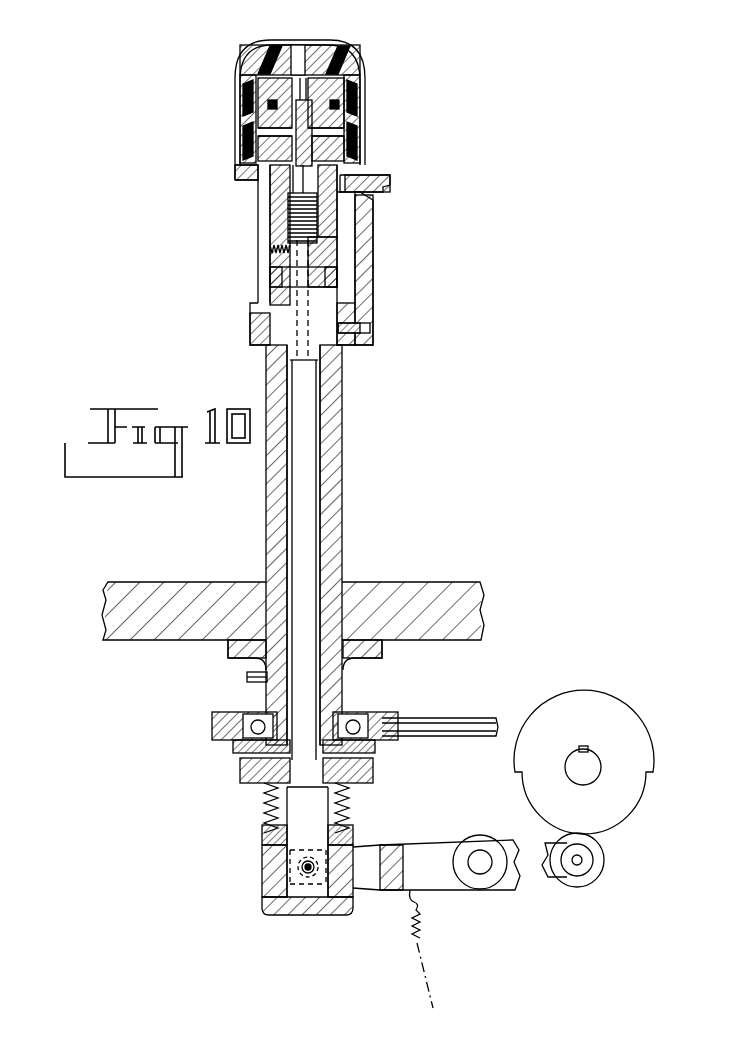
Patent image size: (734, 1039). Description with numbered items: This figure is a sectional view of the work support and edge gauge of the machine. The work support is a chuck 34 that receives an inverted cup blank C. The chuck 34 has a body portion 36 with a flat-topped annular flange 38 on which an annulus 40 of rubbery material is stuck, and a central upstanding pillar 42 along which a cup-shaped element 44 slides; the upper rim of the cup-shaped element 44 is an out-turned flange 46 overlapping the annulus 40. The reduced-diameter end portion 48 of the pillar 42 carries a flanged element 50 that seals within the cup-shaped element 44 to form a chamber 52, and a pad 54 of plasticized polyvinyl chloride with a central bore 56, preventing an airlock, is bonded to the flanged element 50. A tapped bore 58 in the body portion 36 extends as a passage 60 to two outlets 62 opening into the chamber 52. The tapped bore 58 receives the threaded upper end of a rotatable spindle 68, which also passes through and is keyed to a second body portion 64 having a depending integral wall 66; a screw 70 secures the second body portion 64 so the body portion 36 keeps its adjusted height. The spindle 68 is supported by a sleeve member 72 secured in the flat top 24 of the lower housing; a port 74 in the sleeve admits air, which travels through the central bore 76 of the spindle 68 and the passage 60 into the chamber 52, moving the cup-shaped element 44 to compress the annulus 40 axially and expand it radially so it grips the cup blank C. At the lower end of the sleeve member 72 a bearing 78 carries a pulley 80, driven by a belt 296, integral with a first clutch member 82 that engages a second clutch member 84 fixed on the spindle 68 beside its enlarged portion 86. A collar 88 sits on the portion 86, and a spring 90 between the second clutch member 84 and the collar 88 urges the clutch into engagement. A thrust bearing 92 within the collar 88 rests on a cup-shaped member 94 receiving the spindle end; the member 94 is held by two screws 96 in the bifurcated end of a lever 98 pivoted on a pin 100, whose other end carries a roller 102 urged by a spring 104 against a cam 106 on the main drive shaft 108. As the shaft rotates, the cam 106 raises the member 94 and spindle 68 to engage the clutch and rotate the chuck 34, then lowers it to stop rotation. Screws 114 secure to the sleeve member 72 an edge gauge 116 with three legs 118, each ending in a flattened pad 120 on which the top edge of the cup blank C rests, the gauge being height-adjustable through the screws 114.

The cup blank C is at (250, 62).
The flat top 24 is at (215, 582).
The chuck 34 is at (222, 217).
The body portion 36 is at (328, 207).
The flat-topped annular flange 38 is at (372, 167).
The annulus 40 is at (330, 130).
The central upstanding pillar 42 is at (343, 152).
The cup-shaped element 44 is at (277, 128).
The out-turned flange 46 is at (262, 76).
The end portion 48 is at (300, 99).
The flanged element 50 is at (270, 101).
The chamber 52 is at (258, 149).
The pad 54 is at (340, 58).
The central bore 56 is at (299, 58).
The tapped bore 58 is at (292, 217).
The passage 60 is at (303, 190).
The outlets 62 is at (315, 127).
The second body portion 64 is at (336, 250).
The integral wall 66 is at (272, 287).
The rotatable spindle 68 is at (318, 447).
The screw 70 is at (270, 252).
The sleeve member 72 is at (341, 458).
The port 74 is at (272, 675).
The central bore 76 is at (292, 358).
The bearing 78 is at (360, 714).
The pulley 80 is at (233, 716).
The first clutch member 82 is at (368, 748).
The second clutch member 84 is at (245, 773).
The portion of enlarged diameter 86 is at (302, 897).
The collar 88 is at (268, 829).
The spring 90 is at (348, 801).
The thrust bearing 92 is at (272, 846).
The cup-shaped member 94 is at (270, 903).
The screws 96 is at (309, 858).
The lever 98 is at (432, 847).
The pin 100 is at (481, 862).
The roller 102 is at (605, 860).
The spring 104 is at (425, 934).
The cam 106 is at (596, 696).
The main drive shaft 108 is at (601, 771).
The screws 114 is at (377, 332).
The edge gauge 116 is at (408, 323).
The legs 118 is at (370, 266).
The pad 120 is at (250, 189).
The belt 296 is at (485, 718).